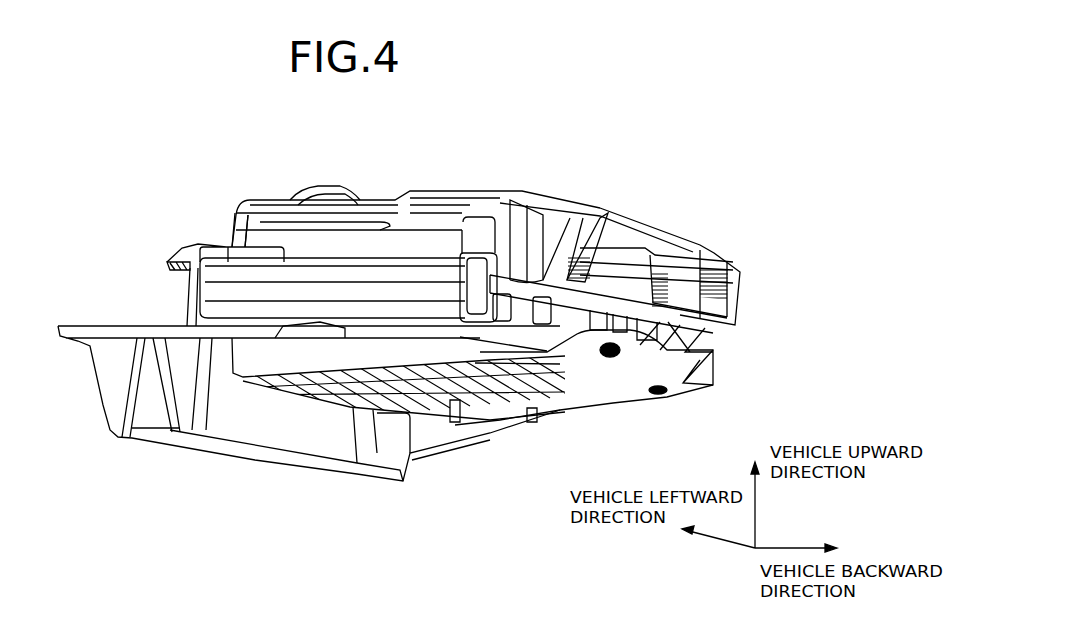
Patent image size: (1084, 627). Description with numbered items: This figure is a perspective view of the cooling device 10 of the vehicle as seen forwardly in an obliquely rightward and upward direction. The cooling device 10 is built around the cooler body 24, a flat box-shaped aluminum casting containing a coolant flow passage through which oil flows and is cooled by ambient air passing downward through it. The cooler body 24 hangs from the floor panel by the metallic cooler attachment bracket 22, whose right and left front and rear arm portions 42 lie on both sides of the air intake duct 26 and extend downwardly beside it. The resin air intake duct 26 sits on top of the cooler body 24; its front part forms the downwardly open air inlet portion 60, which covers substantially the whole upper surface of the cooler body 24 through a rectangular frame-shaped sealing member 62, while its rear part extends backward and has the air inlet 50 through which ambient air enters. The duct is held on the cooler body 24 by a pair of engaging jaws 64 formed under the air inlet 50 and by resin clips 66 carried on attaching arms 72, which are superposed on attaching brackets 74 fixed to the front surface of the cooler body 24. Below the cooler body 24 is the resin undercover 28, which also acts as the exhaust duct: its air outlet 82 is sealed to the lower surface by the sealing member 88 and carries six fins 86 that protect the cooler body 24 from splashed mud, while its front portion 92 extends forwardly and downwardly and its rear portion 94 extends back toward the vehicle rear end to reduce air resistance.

The cooling device 10 is at (165, 183).
The cooler attachment bracket 22 is at (442, 190).
The cooler body 24 is at (297, 252).
The air intake duct 26 is at (738, 230).
The undercover 28 is at (492, 468).
The arm portions 42 is at (232, 231).
The air inlet 50 is at (665, 240).
The air inlet portion 60 is at (396, 242).
The sealing member 62 is at (352, 262).
The engaging jaws 64 is at (598, 262).
The resin clips 66 is at (188, 285).
The attaching arms 72 is at (205, 248).
The attaching brackets 74 is at (178, 268).
The air outlet 82 is at (355, 365).
The fins 86 is at (457, 413).
The sealing member 88 is at (273, 326).
The front portion 92 is at (217, 447).
The rear portion 94 is at (601, 363).